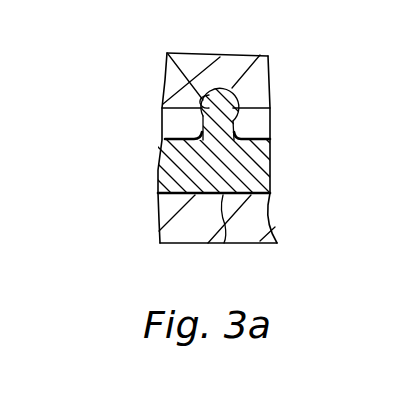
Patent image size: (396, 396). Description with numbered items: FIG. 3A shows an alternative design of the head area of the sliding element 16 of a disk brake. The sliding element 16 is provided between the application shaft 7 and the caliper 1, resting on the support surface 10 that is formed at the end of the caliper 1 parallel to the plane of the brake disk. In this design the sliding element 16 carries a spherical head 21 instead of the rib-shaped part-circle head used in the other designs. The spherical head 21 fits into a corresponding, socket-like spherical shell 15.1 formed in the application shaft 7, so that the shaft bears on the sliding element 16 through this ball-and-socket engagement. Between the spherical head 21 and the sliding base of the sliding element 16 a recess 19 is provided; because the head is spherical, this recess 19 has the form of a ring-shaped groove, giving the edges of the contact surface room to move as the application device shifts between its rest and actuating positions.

The application shaft 7 is at (259, 62).
The spherical head 21 is at (239, 105).
The spherical shell 15.1 is at (203, 99).
The recess 19 is at (199, 130).
The sliding element 16 is at (141, 180).
The caliper 1 is at (190, 228).
The support surface 10 is at (224, 243).